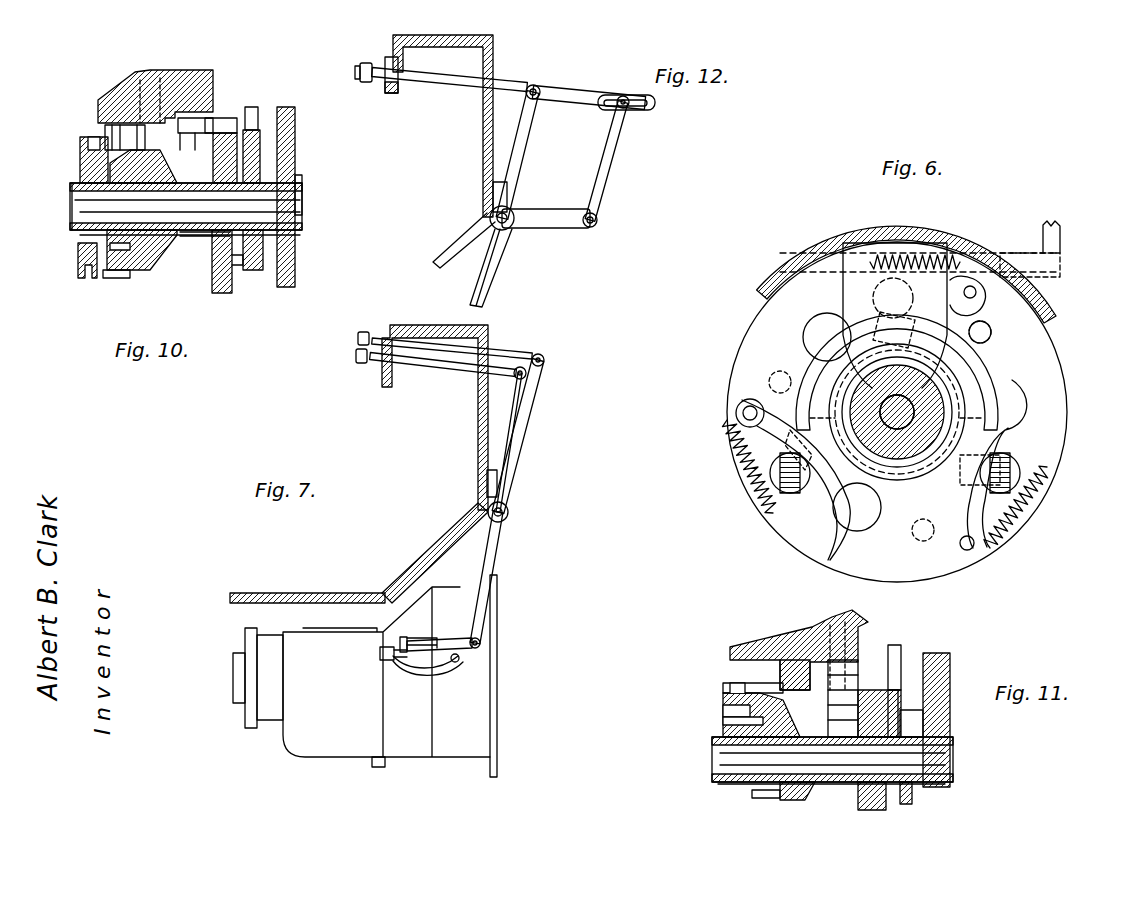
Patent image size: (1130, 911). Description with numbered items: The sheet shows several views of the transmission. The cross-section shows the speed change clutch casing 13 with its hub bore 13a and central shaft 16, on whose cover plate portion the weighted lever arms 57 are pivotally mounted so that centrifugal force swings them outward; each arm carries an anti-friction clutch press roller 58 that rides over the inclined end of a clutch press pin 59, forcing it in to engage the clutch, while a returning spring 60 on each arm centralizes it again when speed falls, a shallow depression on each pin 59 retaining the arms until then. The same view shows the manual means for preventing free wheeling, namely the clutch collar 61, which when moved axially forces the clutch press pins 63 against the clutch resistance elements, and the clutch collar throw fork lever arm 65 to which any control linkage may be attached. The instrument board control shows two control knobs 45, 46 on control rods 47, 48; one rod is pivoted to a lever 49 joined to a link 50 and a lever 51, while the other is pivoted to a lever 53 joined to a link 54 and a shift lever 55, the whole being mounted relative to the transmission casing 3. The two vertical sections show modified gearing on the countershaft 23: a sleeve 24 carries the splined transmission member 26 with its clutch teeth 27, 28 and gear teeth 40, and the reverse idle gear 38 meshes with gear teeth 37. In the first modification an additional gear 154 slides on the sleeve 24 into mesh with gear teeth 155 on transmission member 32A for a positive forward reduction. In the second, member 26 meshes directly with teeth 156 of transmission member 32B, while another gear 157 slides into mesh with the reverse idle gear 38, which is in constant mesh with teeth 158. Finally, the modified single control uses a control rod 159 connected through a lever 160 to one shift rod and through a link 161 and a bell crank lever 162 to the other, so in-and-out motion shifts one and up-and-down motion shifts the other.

In FIG. 7, the transmission casing 3 is at (320, 743).
In FIG. 6, the speed change clutch casing 13 is at (1040, 400).
In FIG. 6, the hub bore 13a is at (935, 437).
In FIG. 6, the shaft 16 is at (897, 420).
In FIG. 10, the countershaft 23 is at (292, 213).
In FIG. 11, the countershaft 23 is at (940, 755).
In FIG. 10, the sleeve 24 is at (192, 238).
In FIG. 11, the sleeve 24 is at (737, 784).
In FIG. 10, the transmission member 26 is at (160, 255).
In FIG. 11, the transmission member 26 is at (815, 790).
In FIG. 10, the clutch teeth 27 is at (120, 260).
In FIG. 11, the clutch teeth 27 is at (728, 722).
In FIG. 10, the clutch teeth 28 is at (78, 253).
In FIG. 11, the clutch teeth 28 is at (725, 705).
In FIG. 10, the transmission member 32A is at (125, 75).
In FIG. 11, the transmission member 32B is at (799, 650).
In FIG. 10, the gear teeth 37 is at (107, 123).
In FIG. 10, the reverse idle gear 38 is at (168, 157).
In FIG. 11, the reverse idle gear 38 is at (858, 672).
In FIG. 10, the gear teeth 40 is at (130, 272).
In FIG. 11, the gear teeth 40 is at (745, 686).
In FIG. 7, the control knob 45 is at (360, 363).
In FIG. 7, the control knob 46 is at (357, 340).
In FIG. 7, the control rod 47 is at (438, 368).
In FIG. 7, the control rod 48 is at (520, 350).
In FIG. 7, the lever 49 is at (495, 545).
In FIG. 7, the link 50 is at (448, 638).
In FIG. 7, the lever 51 is at (404, 637).
In FIG. 7, the lever 53 is at (528, 428).
In FIG. 7, the link 54 is at (448, 665).
In FIG. 7, the shift lever 55 is at (380, 653).
In FIG. 6, the weighted lever arms 57 is at (1005, 417).
In FIG. 6, the clutch press rollers 58 is at (815, 488).
In FIG. 6, the clutch press pins 59 is at (1015, 470).
In FIG. 6, the returning spring 60 is at (740, 480).
In FIG. 6, the clutch collar 61 is at (870, 475).
In FIG. 6, the clutch press pins 63 is at (1000, 340).
In FIG. 6, the clutch collar throw fork lever arm 65 is at (845, 297).
In FIG. 10, the additional gear 154 is at (225, 135).
In FIG. 10, the gear teeth 155 is at (195, 133).
In FIG. 11, the teeth 156 is at (782, 680).
In FIG. 11, the gear 157 is at (870, 686).
In FIG. 11, the teeth 158 is at (830, 628).
In FIG. 12, the control rod 159 is at (440, 80).
In FIG. 12, the lever 160 is at (525, 158).
In FIG. 12, the link 161 is at (608, 172).
In FIG. 12, the bell crank lever 162 is at (556, 228).